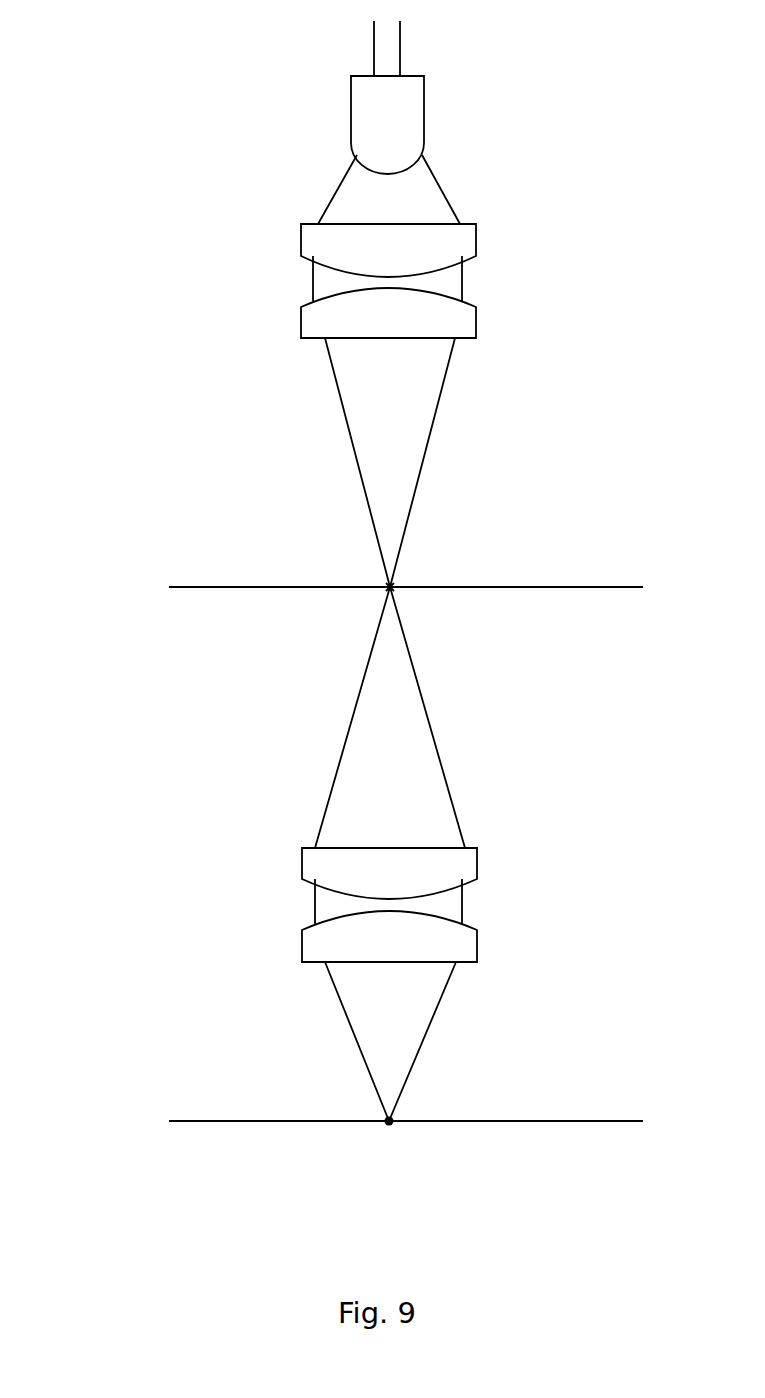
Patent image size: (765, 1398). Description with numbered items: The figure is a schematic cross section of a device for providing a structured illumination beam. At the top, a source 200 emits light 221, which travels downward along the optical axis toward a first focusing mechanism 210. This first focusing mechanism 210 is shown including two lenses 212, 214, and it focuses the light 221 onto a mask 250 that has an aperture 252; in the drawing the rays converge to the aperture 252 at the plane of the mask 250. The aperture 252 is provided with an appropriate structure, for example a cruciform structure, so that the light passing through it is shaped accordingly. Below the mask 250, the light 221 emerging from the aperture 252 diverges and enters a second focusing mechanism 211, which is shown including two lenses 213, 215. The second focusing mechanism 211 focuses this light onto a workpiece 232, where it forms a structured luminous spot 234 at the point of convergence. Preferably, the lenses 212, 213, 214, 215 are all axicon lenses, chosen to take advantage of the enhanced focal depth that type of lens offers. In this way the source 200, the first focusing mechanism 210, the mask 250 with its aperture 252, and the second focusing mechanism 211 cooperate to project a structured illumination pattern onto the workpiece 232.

The source 200 is at (415, 92).
The light 221 is at (427, 188).
The focusing mechanism 210 is at (301, 273).
The lens 212 is at (457, 238).
The lens 214 is at (458, 324).
The mask 250 is at (592, 587).
The aperture 252 is at (391, 588).
The focusing mechanism 211 is at (308, 902).
The lens 213 is at (460, 865).
The lens 215 is at (457, 938).
The workpiece 232 is at (543, 1121).
The structured luminous spot 234 is at (392, 1124).